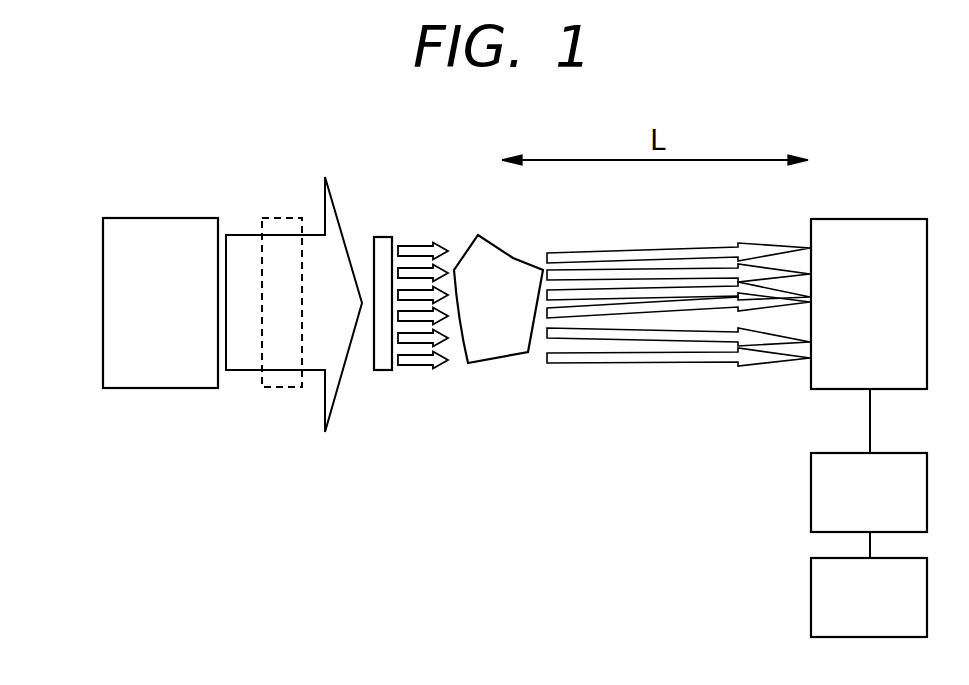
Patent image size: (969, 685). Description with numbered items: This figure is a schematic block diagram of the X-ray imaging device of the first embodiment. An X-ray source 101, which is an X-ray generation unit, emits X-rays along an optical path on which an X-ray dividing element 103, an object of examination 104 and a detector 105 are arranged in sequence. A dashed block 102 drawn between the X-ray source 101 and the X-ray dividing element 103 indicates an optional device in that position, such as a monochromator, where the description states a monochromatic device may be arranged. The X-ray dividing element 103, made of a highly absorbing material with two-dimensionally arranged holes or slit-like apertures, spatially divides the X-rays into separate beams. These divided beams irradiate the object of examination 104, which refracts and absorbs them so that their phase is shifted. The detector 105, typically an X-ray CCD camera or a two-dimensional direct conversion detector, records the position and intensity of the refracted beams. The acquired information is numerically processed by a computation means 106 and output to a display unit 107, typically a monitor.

The X-ray source 101 is at (160, 388).
The light quantity adjusting unit 102 is at (276, 218).
The X-ray dividing element 103 is at (383, 237).
The object of examination 104 is at (470, 355).
The detector 105 is at (810, 377).
The computation means 106 is at (810, 492).
The display unit 107 is at (810, 596).